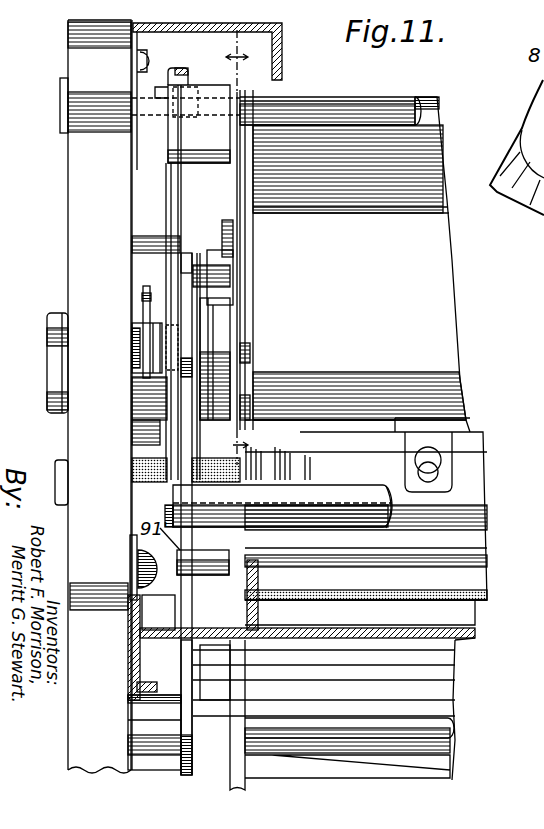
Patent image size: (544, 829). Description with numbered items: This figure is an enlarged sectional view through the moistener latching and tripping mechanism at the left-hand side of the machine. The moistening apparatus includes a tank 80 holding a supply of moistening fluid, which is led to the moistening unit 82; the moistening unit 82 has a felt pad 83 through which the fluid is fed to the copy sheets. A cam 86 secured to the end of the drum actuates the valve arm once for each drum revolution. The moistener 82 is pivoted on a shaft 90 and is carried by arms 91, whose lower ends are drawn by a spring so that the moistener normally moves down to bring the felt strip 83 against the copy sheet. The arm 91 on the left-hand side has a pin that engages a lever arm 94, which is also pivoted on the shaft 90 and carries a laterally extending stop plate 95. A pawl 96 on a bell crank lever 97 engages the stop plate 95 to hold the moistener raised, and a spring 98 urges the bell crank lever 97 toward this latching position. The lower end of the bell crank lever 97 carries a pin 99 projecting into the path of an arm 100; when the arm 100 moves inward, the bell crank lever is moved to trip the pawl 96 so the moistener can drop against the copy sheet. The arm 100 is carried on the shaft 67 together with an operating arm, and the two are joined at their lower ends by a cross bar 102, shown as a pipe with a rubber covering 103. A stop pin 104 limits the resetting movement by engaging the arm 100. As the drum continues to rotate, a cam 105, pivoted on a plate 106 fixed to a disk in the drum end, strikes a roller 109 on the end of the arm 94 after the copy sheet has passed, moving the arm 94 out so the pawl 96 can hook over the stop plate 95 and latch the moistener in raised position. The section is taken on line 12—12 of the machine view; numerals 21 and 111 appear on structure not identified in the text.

The side plate 21 is at (80, 50).
The section line 12 is at (239, 247).
The shaft 67 is at (320, 108).
The tank 80 is at (134, 213).
The moistening unit 82 is at (500, 460).
The felt pad 83 is at (487, 595).
The cam 86 is at (248, 328).
The shaft 90 is at (452, 726).
The arms 91 is at (248, 693).
The lever arm 94 is at (188, 287).
The stop plate 95 is at (150, 378).
The pawl 96 is at (135, 328).
The bell crank lever 97 is at (135, 400).
The spring 98 is at (145, 345).
The pin 99 is at (145, 433).
The arm 100 is at (173, 190).
The cross bar 102 is at (392, 522).
The rubber covering 103 is at (340, 487).
The stop pin 104 is at (145, 244).
The cam 105 is at (233, 228).
The plate 106 is at (245, 372).
The roller 109 is at (232, 268).
The hatched wall 111 is at (455, 638).